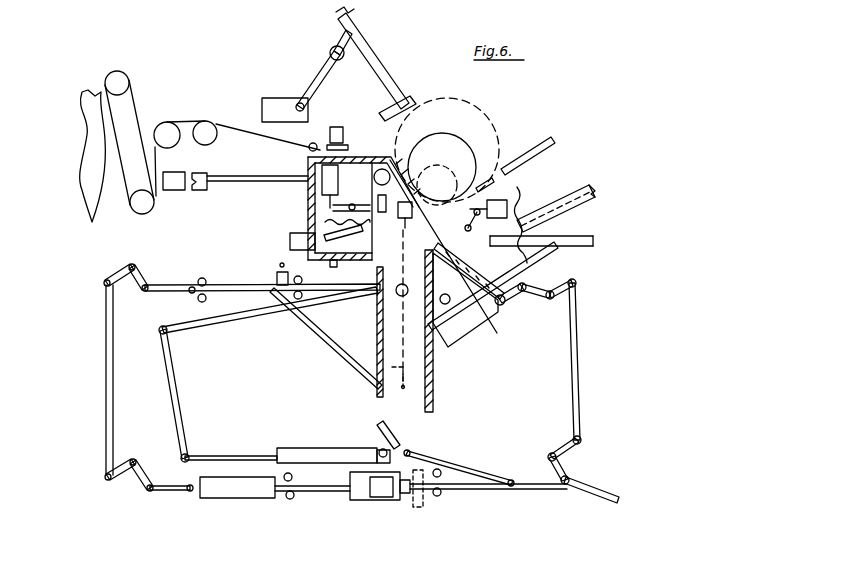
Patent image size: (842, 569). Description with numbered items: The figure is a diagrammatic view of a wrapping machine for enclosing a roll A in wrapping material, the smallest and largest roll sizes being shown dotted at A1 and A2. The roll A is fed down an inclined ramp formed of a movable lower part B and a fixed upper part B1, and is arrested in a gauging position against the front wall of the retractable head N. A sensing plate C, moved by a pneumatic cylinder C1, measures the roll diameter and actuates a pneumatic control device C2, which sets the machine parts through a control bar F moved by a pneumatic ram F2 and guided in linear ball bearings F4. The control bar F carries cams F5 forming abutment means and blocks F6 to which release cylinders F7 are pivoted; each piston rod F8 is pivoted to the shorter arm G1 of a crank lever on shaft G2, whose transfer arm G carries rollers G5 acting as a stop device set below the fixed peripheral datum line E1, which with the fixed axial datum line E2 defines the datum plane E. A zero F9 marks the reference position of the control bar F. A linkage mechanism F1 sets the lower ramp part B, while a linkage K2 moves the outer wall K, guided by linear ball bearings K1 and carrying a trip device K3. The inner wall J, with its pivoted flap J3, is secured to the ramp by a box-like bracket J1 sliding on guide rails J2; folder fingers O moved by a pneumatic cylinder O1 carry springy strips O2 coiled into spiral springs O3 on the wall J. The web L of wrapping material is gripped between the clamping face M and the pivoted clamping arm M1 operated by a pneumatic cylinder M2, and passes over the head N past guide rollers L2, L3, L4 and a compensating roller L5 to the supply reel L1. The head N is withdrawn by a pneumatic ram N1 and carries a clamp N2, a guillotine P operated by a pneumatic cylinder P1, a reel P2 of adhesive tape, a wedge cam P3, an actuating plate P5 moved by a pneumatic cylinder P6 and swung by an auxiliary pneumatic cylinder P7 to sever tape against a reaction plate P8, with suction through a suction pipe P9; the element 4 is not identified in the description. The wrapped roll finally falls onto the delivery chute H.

The web of wrapping material L is at (238, 118).
The supply reel L1 is at (85, 182).
The guide roller L2 is at (205, 121).
The guide roller L3 is at (166, 122).
The guide roller L4 is at (125, 80).
The compensating roller L5 is at (134, 208).
The retractable head N is at (306, 162).
The pneumatic ram N1 is at (172, 190).
The clamp N2 is at (330, 145).
The sensing plate C is at (403, 110).
The pneumatic cylinder C1 is at (352, 22).
The pneumatic control device C2 is at (292, 108).
The pivot 4 is at (386, 118).
The guillotine P is at (340, 170).
The pneumatic cylinder P1 is at (414, 160).
The reel of adhesive tape P2 is at (392, 160).
The wedge cam P3 is at (373, 178).
The actuating plate P5 is at (372, 258).
The pneumatic cylinder P6 is at (290, 242).
The auxiliary pneumatic cylinder P7 is at (324, 236).
The reaction plate P8 is at (384, 214).
The suction pipe P9 is at (326, 220).
The roll A is at (440, 133).
The smallest roll size A1 is at (437, 178).
The largest roll size A2 is at (488, 118).
The clamping face M is at (452, 160).
The pivoted clamping arm M1 is at (497, 200).
The pneumatic cylinder M2 is at (521, 200).
The lower ramp part B is at (484, 180).
The upper ramp part B1 is at (522, 160).
The inner wall J is at (440, 340).
The box-like bracket J1 is at (560, 250).
The guide rails J2 is at (580, 183).
The pivoted flap J3 is at (434, 378).
The folder fingers O is at (525, 262).
The pneumatic cylinder O1 is at (585, 240).
The springy strip O2 is at (535, 304).
The spiral spring O3 is at (444, 253).
The outer wall K is at (377, 340).
The linear ball bearings K1 is at (205, 280).
The linkage K2 is at (106, 388).
The trip device K3 is at (280, 265).
The transfer arm G is at (234, 318).
The shorter arm G1 is at (178, 415).
The shaft G2 is at (160, 332).
The rollers G5 is at (398, 296).
The fixed datum plane E is at (376, 383).
The fixed peripheral datum line E1 is at (404, 250).
The fixed axial datum line E2 is at (403, 390).
The control bar F is at (385, 498).
The linkage mechanism F1 is at (578, 360).
The pneumatic ram F2 is at (222, 498).
The linear ball bearings F4 is at (291, 500).
The cams F5 is at (410, 443).
The blocks F6 is at (378, 500).
The release cylinder F7 is at (318, 448).
The piston rod F8 is at (218, 455).
The zero F9 is at (423, 494).
The delivery chute H is at (575, 493).